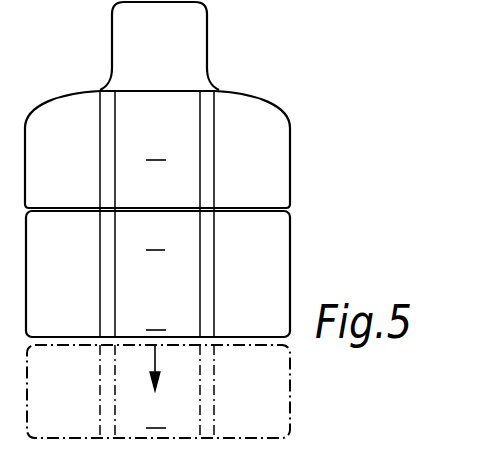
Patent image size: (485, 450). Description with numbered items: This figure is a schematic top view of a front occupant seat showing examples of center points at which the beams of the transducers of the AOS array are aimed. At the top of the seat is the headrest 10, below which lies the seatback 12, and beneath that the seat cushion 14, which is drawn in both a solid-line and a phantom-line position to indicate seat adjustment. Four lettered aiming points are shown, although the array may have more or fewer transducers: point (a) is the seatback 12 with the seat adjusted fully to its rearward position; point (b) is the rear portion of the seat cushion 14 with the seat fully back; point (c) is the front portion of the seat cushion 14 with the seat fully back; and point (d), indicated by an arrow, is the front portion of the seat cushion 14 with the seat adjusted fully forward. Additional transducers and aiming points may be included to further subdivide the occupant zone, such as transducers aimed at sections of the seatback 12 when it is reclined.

The headrest 10 is at (169, 62).
The seatback 12 is at (71, 173).
The seat cushion 14 is at (73, 297).